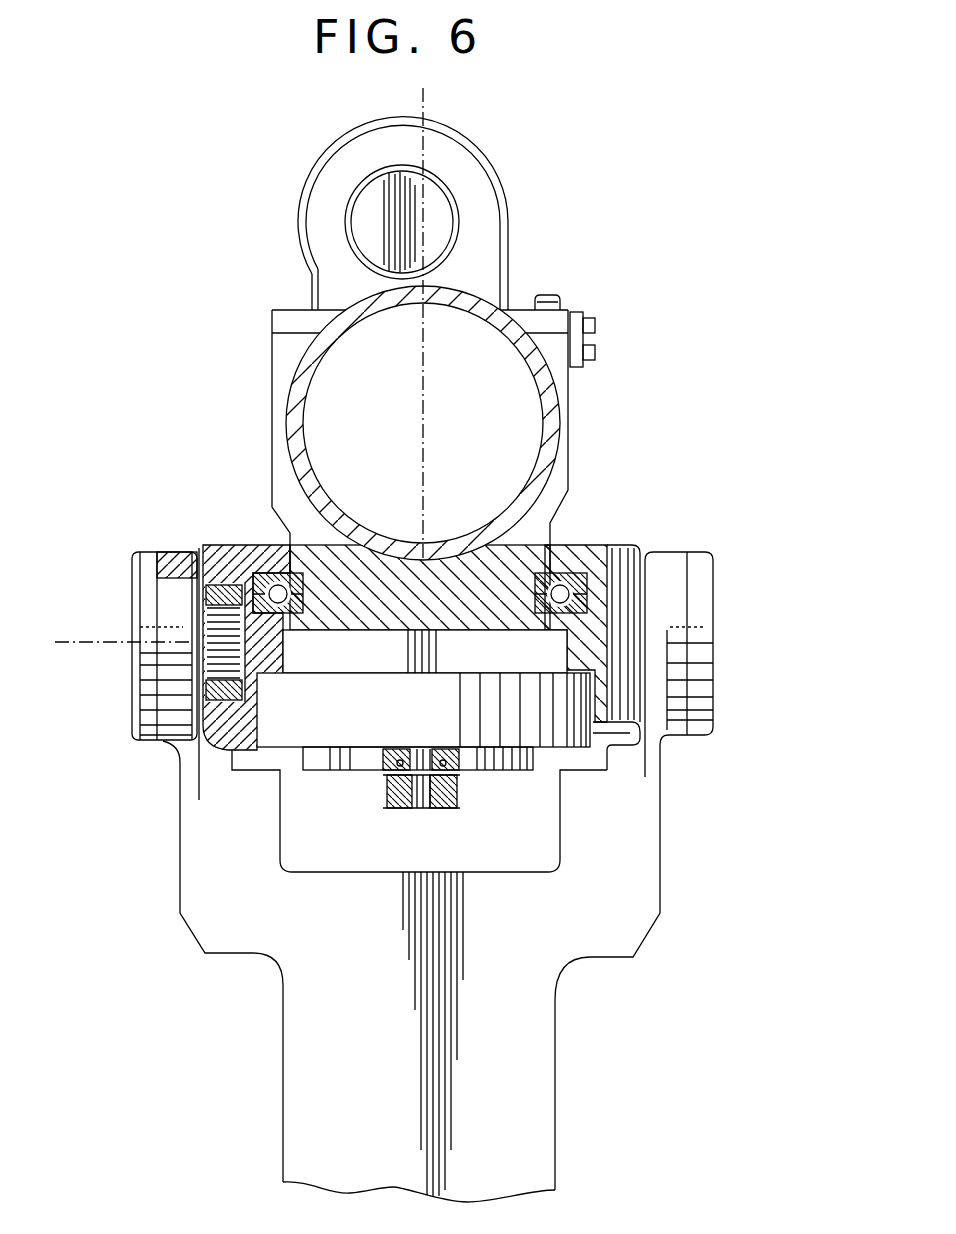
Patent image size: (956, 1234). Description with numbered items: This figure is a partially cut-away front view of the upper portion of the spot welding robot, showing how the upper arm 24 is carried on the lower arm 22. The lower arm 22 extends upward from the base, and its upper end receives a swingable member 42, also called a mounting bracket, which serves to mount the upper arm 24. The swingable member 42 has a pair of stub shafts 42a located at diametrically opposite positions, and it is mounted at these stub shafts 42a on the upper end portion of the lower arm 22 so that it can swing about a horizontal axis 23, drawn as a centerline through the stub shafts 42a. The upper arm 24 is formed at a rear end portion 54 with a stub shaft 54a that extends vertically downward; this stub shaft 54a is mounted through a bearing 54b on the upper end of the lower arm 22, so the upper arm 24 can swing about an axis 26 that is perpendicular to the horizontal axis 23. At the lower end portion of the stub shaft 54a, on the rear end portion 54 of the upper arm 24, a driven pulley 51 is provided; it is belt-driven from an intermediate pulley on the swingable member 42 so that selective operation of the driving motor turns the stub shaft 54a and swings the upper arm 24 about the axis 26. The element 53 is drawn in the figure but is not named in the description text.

The lower arm 22 is at (305, 1078).
The horizontal axis 23 is at (90, 638).
The upper arm 24 is at (553, 402).
The axis 26 is at (430, 235).
The swingable member 42 is at (697, 565).
The stub shafts 42a is at (177, 590).
The driven pulley 51 is at (447, 808).
The knurled ring 53 is at (491, 752).
The rear end portion 54 is at (283, 375).
The stub shaft 54a is at (340, 607).
The bearing 54b is at (602, 520).